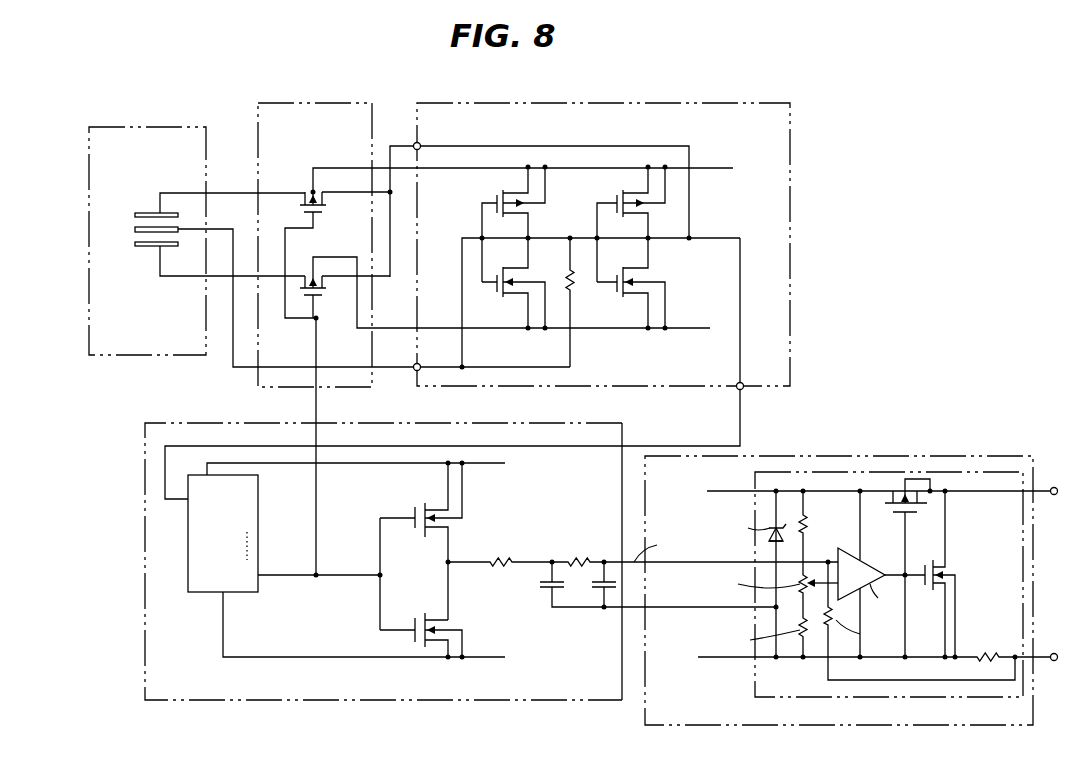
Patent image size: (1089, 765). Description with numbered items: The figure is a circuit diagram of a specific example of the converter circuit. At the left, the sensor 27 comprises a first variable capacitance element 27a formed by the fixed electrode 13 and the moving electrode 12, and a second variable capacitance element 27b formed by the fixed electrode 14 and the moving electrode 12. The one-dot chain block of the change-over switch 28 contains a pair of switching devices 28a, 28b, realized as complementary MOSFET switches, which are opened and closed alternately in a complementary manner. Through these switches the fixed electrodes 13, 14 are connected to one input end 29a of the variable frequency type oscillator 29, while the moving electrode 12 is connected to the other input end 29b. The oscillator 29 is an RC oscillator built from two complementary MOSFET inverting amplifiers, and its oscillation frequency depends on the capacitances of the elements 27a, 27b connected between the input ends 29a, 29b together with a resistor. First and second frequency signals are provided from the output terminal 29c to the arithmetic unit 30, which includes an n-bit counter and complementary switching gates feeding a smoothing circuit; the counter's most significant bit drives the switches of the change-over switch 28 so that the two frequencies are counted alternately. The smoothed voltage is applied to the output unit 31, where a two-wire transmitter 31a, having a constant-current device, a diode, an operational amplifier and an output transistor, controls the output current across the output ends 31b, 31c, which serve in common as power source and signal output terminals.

The moving electrode 12 is at (135, 230).
The fixed electrode 13 is at (148, 213).
The fixed electrode 14 is at (143, 248).
The sensor 27 is at (172, 127).
The first variable capacitance element 27a is at (135, 222).
The second variable capacitance element 27b is at (135, 238).
The change-over switch 28 is at (325, 103).
The switching device 28a is at (303, 178).
The switching device 28b is at (320, 305).
The variable frequency type oscillator 29 is at (555, 103).
The input end 29a is at (420, 144).
The input end 29b is at (417, 372).
The output terminal 29c is at (744, 390).
The arithmetic unit 30 is at (366, 700).
The output unit 31 is at (740, 726).
The two-wire transmitter 31a is at (862, 698).
The output end 31b is at (1055, 487).
The output end 31c is at (1055, 653).